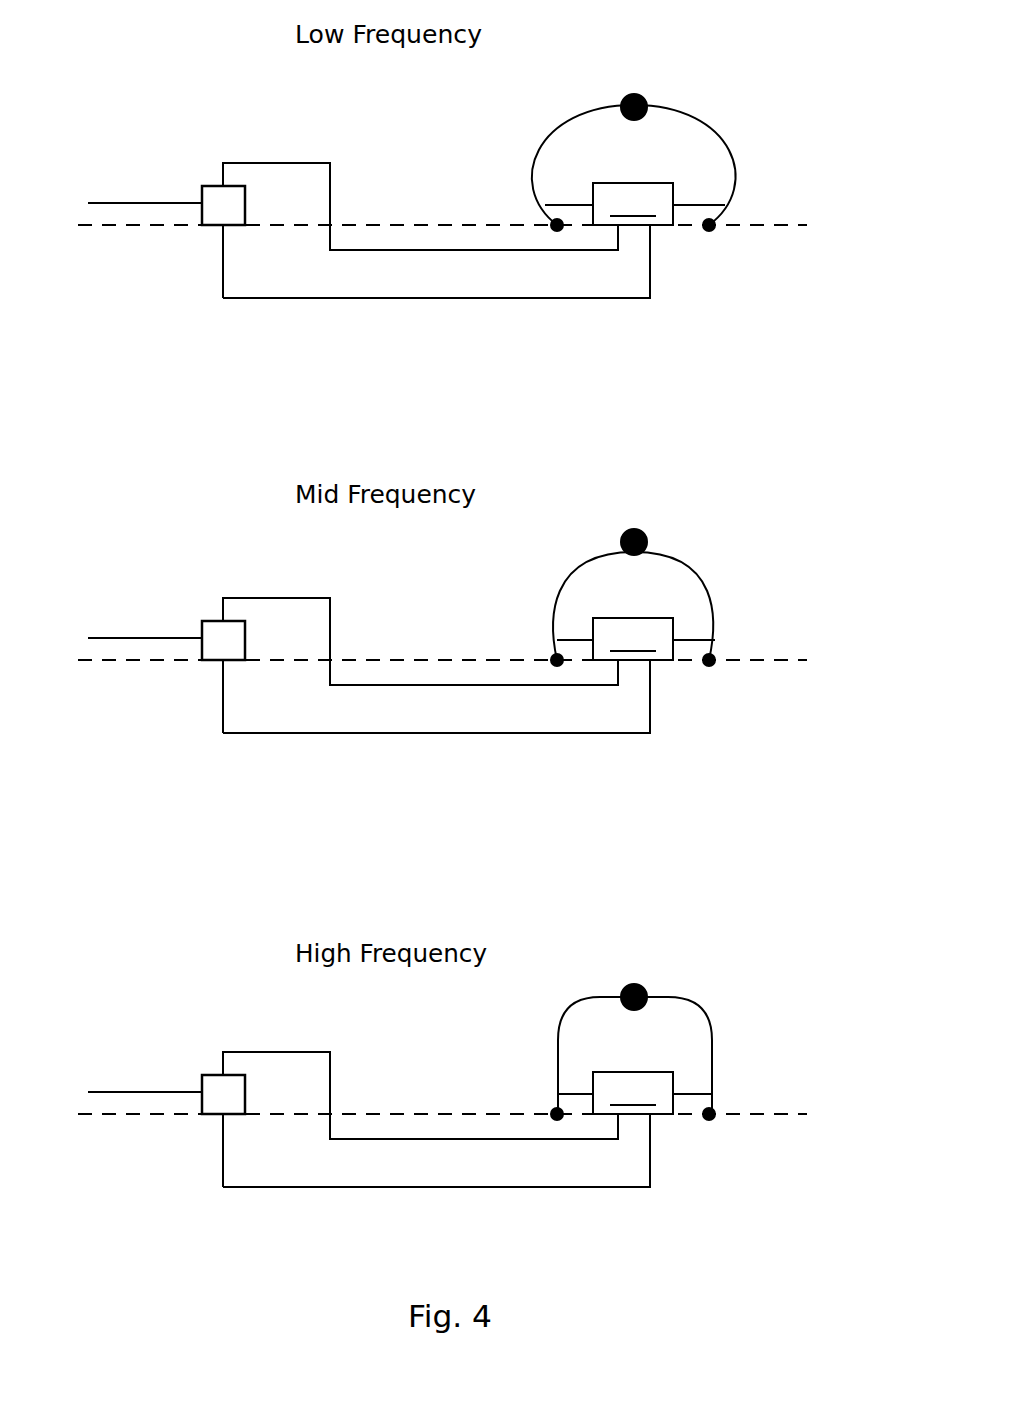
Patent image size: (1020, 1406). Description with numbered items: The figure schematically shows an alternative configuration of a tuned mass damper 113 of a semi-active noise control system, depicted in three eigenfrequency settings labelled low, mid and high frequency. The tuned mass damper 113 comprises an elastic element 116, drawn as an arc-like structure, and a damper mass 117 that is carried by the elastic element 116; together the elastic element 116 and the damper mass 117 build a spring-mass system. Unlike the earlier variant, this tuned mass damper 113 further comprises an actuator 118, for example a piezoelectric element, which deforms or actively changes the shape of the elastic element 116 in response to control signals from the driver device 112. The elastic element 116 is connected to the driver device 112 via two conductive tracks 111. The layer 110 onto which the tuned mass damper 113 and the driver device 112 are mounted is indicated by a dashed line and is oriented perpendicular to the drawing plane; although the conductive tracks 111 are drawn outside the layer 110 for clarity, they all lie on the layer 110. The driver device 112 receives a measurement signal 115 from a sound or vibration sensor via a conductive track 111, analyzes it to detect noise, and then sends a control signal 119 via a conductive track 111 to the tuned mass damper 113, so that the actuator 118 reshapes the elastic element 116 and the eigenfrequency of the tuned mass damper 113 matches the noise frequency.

The layer 110 is at (770, 222).
The conductive tracks 111 is at (435, 302).
The driver device 112 is at (210, 228).
The tuned mass damper 113 is at (700, 67).
The measurement signal 115 is at (177, 200).
The elastic element 116 is at (728, 133).
The damper mass 117 is at (632, 93).
The actuator 118 is at (633, 648).
The control signal 119 is at (388, 247).